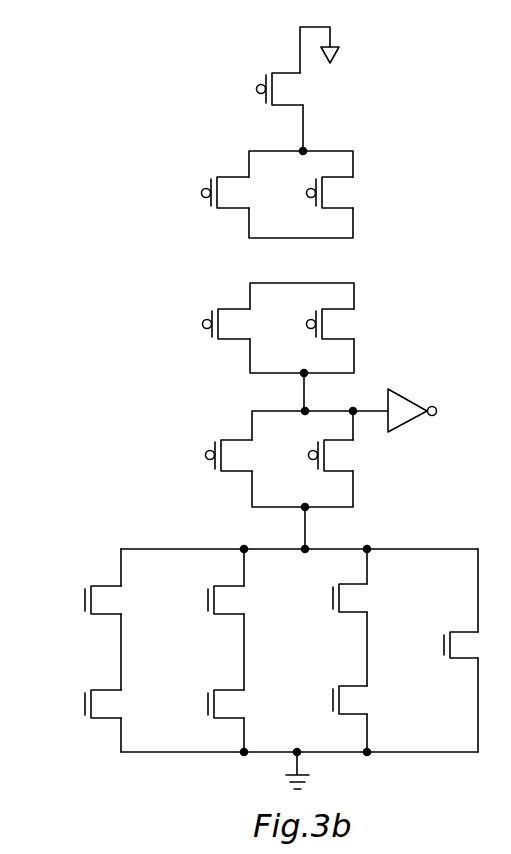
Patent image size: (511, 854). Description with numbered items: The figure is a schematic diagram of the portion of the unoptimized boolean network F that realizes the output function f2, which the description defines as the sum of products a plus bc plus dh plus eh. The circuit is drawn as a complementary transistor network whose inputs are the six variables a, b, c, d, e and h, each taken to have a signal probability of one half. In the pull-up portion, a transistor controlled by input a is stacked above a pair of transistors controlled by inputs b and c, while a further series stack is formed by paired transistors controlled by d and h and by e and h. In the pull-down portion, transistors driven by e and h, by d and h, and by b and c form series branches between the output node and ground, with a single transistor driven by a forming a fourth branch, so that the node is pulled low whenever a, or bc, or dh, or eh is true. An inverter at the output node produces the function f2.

The input variable a is at (256, 89).
The input variable b is at (202, 193).
The input variable c is at (306, 193).
The input variable d is at (202, 324).
The input variable e is at (206, 455).
The input variable h is at (306, 324).
The output function f2 is at (436, 411).